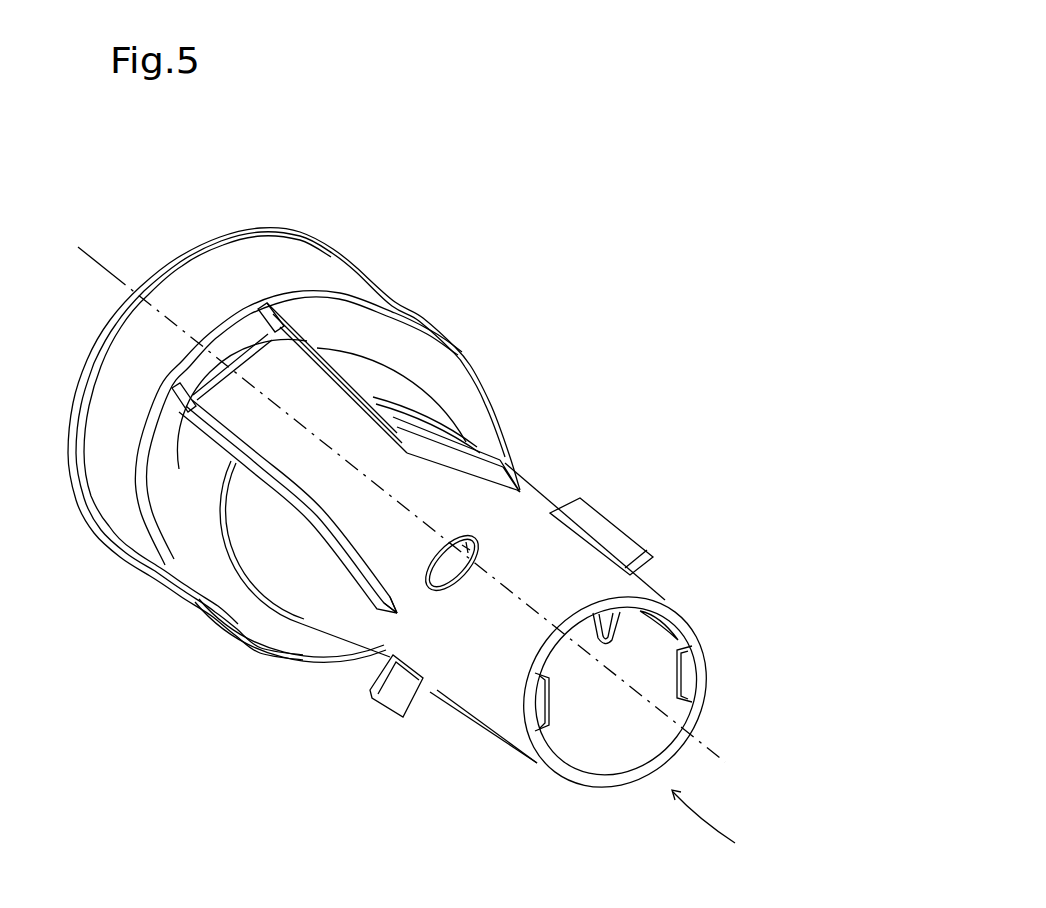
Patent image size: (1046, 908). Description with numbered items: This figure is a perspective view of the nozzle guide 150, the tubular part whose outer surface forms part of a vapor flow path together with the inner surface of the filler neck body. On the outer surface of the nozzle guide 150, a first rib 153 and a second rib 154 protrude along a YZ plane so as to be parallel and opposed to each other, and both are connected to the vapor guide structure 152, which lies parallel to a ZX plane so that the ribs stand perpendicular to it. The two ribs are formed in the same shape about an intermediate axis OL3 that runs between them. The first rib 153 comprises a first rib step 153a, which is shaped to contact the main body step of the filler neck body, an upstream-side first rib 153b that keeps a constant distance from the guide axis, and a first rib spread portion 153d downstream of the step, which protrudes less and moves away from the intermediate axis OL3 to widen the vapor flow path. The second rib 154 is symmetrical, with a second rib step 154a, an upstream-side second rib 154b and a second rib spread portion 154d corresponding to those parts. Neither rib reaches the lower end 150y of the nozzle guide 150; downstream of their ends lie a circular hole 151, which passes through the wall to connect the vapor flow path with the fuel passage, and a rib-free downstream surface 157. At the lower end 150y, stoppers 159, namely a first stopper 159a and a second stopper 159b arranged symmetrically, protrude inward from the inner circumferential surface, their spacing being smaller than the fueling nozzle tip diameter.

The nozzle guide 150 is at (290, 182).
The lower end of the nozzle guide 150y is at (731, 826).
The intermediate axis OL3 is at (379, 491).
The circular hole 151 is at (466, 542).
The vapor guide structure 152 is at (186, 360).
The first rib 153 is at (245, 572).
The first rib step 153a is at (292, 490).
The upstream-side first rib 153b is at (226, 432).
The first rib spread portion 153d is at (357, 548).
The second rib 154 is at (443, 353).
The second rib step 154a is at (374, 396).
The upstream-side second rib 154b is at (318, 347).
The second rib spread portion 154d is at (487, 447).
The downstream surface 157 is at (507, 622).
The stoppers 159 is at (607, 719).
The first stopper 159a is at (543, 706).
The second stopper 159b is at (670, 690).